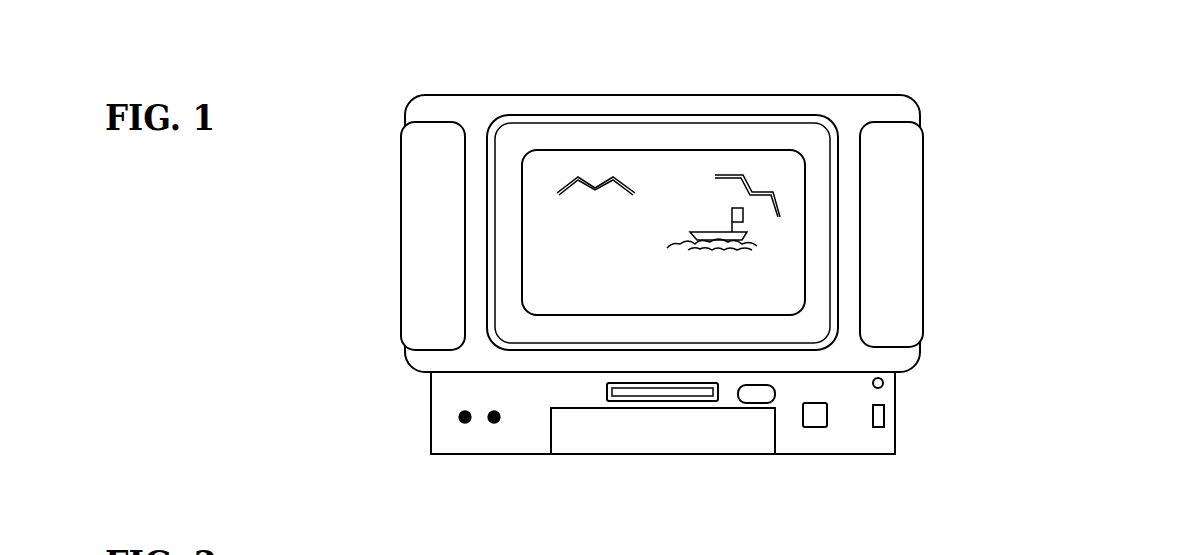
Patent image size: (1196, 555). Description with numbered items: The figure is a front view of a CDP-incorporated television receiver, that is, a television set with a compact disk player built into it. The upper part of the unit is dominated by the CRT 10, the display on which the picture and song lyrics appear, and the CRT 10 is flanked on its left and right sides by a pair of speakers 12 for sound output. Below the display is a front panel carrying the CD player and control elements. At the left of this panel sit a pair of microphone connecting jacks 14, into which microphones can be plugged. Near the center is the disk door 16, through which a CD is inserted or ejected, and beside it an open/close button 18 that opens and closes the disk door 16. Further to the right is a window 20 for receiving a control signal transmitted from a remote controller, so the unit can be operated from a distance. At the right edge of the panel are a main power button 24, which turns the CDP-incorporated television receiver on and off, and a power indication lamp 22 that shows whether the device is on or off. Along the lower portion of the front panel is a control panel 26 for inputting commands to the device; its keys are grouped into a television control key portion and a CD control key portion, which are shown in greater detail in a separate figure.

The CRT 10 is at (695, 160).
The speakers 12 is at (420, 180).
The microphone connecting jacks 14 is at (488, 418).
The disk door 16 is at (670, 402).
The open/close button 18 is at (762, 395).
The window 20 is at (815, 415).
The power indication lamp 22 is at (884, 383).
The main power button 24 is at (885, 415).
The control panel 26 is at (596, 443).